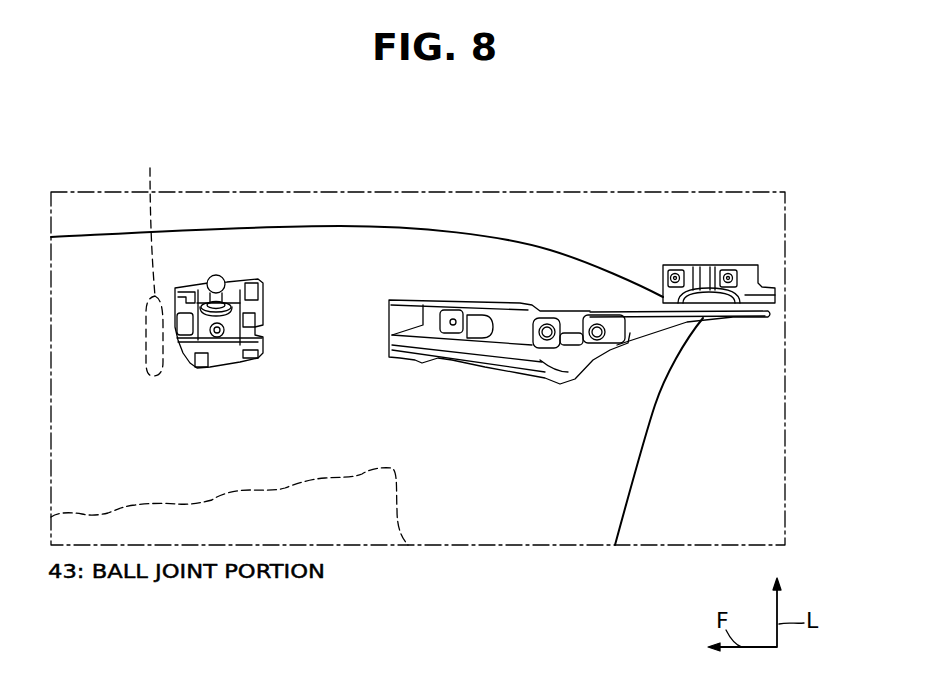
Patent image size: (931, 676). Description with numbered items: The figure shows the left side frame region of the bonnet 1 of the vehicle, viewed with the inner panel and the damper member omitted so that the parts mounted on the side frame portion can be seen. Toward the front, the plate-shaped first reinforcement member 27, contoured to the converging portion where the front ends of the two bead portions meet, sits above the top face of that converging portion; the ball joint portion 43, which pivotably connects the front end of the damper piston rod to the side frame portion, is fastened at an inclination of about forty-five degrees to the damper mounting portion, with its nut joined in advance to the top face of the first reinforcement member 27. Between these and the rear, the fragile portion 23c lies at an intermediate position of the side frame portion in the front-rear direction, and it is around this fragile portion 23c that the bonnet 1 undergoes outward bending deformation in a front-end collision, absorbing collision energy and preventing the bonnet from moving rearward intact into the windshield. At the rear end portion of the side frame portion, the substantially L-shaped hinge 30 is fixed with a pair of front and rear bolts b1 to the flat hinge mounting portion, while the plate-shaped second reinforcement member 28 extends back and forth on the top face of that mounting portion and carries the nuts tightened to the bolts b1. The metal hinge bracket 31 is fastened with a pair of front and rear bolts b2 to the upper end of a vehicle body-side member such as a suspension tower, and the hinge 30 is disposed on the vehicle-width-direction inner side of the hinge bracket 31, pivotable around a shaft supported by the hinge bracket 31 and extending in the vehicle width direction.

The bonnet 1 is at (364, 206).
The fragile portion 23c is at (154, 260).
The first reinforcement member 27 is at (245, 281).
The ball joint portion 43 is at (214, 275).
The second reinforcement member 28 is at (528, 316).
The bolts b1 is at (549, 326).
The hinge 30 is at (642, 330).
The hinge bracket 31 is at (728, 271).
The bolts b2 is at (722, 275).